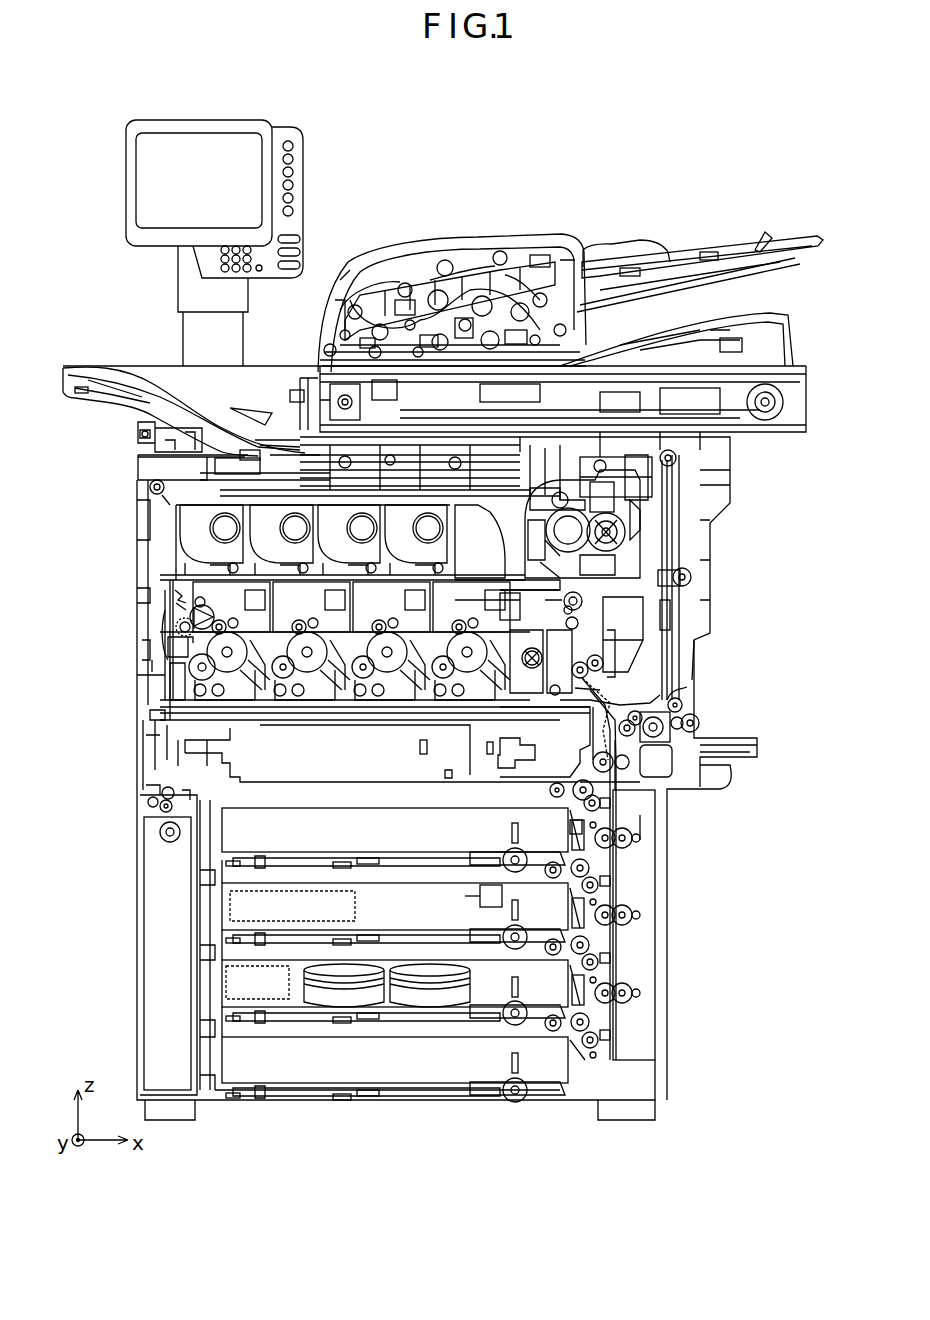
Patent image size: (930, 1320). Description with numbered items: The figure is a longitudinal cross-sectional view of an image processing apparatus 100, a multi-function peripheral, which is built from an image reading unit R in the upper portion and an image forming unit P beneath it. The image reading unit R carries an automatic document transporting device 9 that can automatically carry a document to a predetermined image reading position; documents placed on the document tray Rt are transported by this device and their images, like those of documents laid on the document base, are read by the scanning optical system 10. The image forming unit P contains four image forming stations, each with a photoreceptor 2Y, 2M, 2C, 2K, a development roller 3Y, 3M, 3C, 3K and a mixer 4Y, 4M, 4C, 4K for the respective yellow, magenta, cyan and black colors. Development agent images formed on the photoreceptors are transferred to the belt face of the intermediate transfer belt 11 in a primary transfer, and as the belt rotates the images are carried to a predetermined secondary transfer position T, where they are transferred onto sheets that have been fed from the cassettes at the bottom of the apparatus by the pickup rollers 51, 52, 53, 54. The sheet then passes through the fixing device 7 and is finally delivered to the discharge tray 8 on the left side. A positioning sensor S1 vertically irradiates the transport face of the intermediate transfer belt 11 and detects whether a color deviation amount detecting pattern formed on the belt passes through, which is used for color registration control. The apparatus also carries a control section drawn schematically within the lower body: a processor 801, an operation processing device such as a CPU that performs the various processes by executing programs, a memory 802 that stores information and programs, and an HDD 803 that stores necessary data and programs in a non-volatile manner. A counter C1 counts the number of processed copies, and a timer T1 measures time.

The image processing apparatus 100 is at (806, 148).
The discharge tray 8 is at (146, 370).
The automatic document transporting device 9 is at (346, 263).
The scanning optical system 10 is at (317, 362).
The document tray Rt is at (693, 252).
The image reading unit R is at (826, 228).
The image forming unit P is at (826, 440).
The intermediate transfer belt 11 is at (506, 592).
The photoreceptor 2Y is at (231, 641).
The photoreceptor 2M is at (311, 641).
The photoreceptor 2C is at (391, 641).
The photoreceptor 2K is at (471, 641).
The development roller 3Y is at (190, 667).
The mixer 4Y is at (200, 696).
The development roller 3M is at (263, 692).
The mixer 4M is at (284, 720).
The development roller 3C is at (342, 692).
The mixer 4C is at (366, 720).
The development roller 3K is at (420, 692).
The mixer 4K is at (437, 692).
The fixing device 7 is at (653, 543).
The secondary transfer position T is at (583, 607).
The positioning sensor S1 is at (541, 668).
The counter C1 is at (652, 762).
The pickup roller 51 is at (560, 796).
The pickup roller 52 is at (560, 872).
The pickup roller 53 is at (560, 950).
The pickup roller 54 is at (560, 1027).
The processor 801 is at (357, 908).
The memory 802 is at (333, 1012).
The HDD 803 is at (412, 1012).
The timer T1 is at (262, 1000).